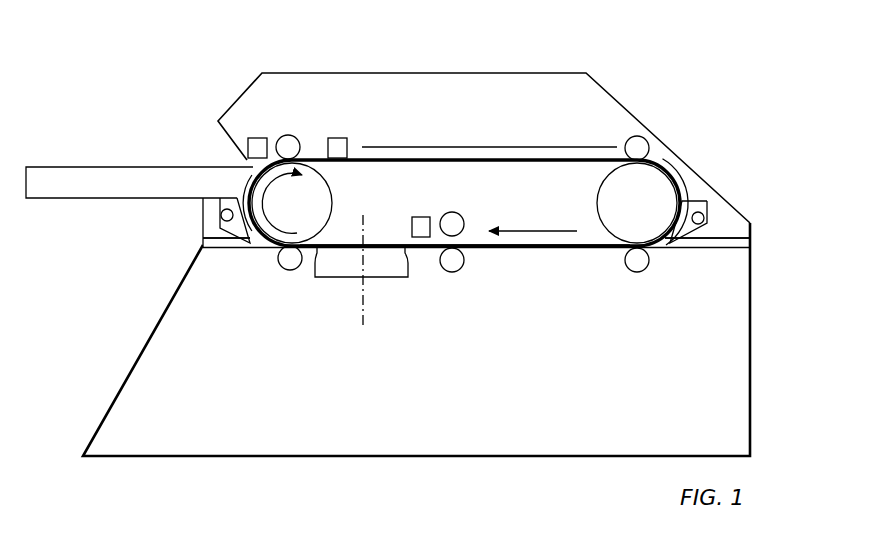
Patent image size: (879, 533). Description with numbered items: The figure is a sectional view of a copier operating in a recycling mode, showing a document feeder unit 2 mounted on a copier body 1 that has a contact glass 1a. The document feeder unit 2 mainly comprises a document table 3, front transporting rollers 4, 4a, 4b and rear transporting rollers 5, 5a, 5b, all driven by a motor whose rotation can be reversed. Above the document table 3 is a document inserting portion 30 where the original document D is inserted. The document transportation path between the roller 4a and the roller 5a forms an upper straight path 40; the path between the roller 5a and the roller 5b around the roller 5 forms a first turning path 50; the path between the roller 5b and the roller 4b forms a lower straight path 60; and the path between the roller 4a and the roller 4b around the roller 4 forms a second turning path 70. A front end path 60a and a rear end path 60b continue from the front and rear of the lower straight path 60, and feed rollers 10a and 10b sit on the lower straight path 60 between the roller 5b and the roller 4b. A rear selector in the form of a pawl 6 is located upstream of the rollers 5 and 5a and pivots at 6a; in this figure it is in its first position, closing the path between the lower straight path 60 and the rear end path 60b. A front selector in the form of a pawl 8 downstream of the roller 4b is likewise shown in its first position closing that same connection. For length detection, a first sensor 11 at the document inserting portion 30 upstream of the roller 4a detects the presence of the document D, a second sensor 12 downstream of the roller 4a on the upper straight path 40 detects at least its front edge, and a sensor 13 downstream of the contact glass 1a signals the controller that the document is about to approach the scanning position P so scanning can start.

The copier body 1 is at (115, 387).
The contact glass 1a is at (395, 270).
The document feeder unit 2 is at (408, 102).
The document table 3 is at (54, 167).
The front transporting roller 4 is at (325, 196).
The front transporting roller 4a is at (288, 132).
The front transporting roller 4b is at (293, 271).
The rear transporting roller 5 is at (601, 194).
The rear transporting roller 5a is at (626, 142).
The rear transporting roller 5b is at (641, 273).
The rear selector pawl 6 is at (694, 202).
The pivot 6a is at (704, 212).
The front selector pawl 8 is at (250, 248).
The feed roller 10a is at (464, 222).
The feed roller 10b is at (453, 273).
The first sensor 11 is at (256, 137).
The second sensor 12 is at (338, 138).
The sensor 13 is at (428, 216).
The document inserting portion 30 is at (242, 156).
The upper straight path 40 is at (498, 145).
The first turning path 50 is at (686, 181).
The lower straight path 60 is at (543, 261).
The front end path 60a is at (199, 240).
The rear end path 60b is at (757, 240).
The second turning path 70 is at (242, 184).
The scanning position P is at (362, 288).
The document D is at (583, 249).